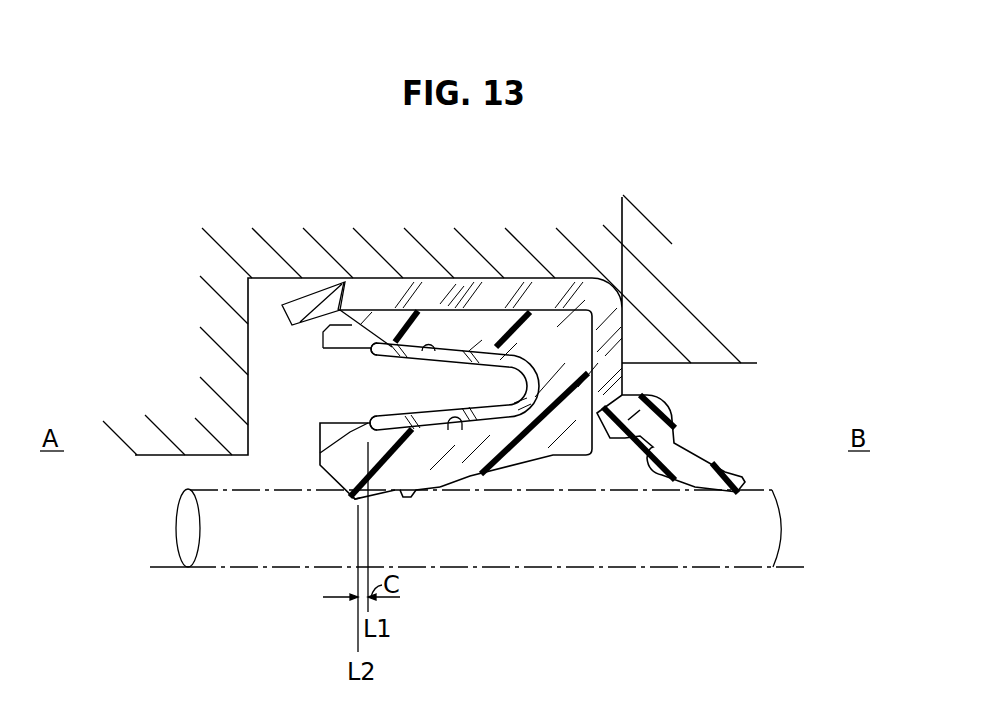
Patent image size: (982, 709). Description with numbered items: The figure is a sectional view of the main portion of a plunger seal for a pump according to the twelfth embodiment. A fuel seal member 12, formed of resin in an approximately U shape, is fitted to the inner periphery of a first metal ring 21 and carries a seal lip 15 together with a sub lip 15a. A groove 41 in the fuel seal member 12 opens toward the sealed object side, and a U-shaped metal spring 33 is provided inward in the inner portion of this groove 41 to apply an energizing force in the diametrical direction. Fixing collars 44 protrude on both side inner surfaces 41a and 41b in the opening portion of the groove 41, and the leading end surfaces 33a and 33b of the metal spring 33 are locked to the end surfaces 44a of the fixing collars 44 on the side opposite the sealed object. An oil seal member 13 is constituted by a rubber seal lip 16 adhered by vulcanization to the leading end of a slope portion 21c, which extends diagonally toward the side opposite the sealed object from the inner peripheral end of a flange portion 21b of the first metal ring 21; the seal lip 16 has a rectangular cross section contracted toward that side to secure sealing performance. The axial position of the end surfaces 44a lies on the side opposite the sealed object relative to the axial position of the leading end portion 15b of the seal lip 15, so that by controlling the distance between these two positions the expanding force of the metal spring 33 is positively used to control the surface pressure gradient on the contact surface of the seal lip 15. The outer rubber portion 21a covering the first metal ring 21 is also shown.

The fuel seal member 12 is at (316, 333).
The oil seal member 13 is at (683, 421).
The seal lip 15 is at (348, 483).
The sub lip 15a is at (412, 493).
The leading end portion 15b is at (347, 497).
The seal lip 16 is at (725, 484).
The first metal ring 21 is at (519, 300).
The outer peripheral rubber portion 21a is at (462, 297).
The flange portion 21b is at (608, 353).
The slope portion 21c is at (647, 398).
The U-shaped metal spring 33 is at (391, 347).
The leading end surface 33a is at (320, 453).
The leading end surface 33b is at (332, 316).
The groove 41 is at (330, 382).
The side inner surface 41a is at (460, 431).
The side inner surface 41b is at (441, 345).
The fixing collar 44 is at (323, 344).
The end surface 44a is at (374, 352).